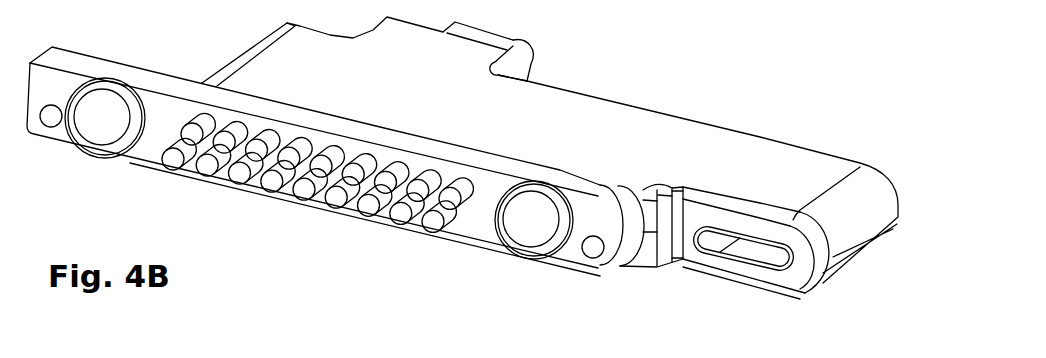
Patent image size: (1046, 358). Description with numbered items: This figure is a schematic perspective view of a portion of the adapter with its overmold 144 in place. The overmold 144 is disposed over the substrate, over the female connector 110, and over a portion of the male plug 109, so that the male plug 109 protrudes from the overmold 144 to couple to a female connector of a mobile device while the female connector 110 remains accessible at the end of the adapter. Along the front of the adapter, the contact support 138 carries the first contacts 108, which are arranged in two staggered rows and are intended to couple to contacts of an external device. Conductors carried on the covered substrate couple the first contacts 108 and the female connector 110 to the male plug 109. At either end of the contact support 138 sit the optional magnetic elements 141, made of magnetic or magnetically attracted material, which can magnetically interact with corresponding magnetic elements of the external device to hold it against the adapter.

The first contacts 108 is at (398, 218).
The male plug 109 is at (517, 38).
The female connector 110 is at (773, 263).
The contact support 138 is at (483, 235).
The magnetic elements 141 is at (110, 153).
The overmold 144 is at (633, 135).